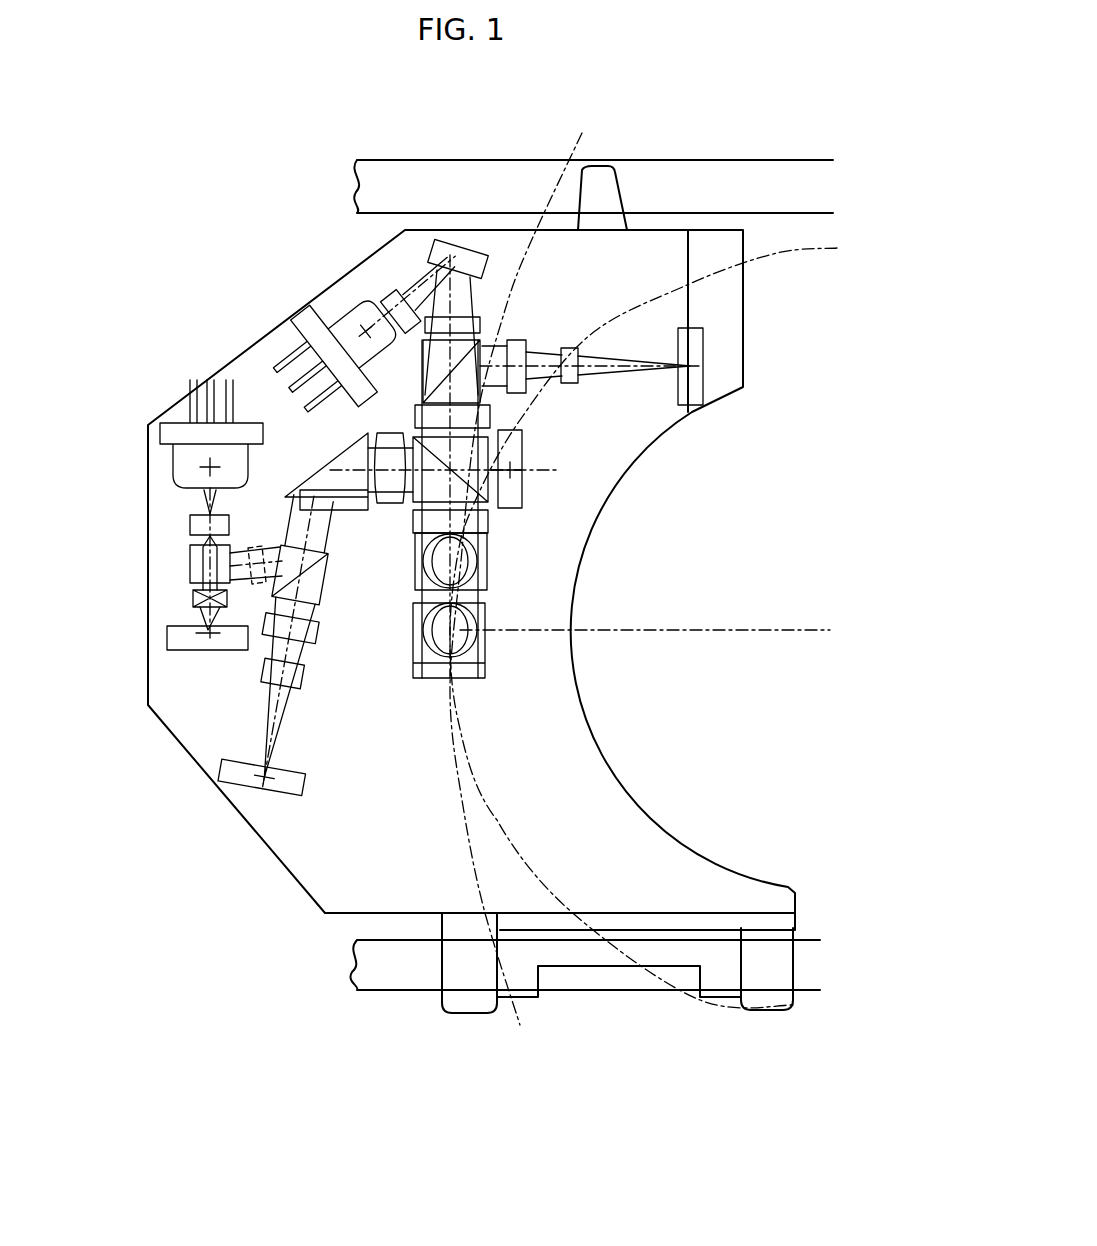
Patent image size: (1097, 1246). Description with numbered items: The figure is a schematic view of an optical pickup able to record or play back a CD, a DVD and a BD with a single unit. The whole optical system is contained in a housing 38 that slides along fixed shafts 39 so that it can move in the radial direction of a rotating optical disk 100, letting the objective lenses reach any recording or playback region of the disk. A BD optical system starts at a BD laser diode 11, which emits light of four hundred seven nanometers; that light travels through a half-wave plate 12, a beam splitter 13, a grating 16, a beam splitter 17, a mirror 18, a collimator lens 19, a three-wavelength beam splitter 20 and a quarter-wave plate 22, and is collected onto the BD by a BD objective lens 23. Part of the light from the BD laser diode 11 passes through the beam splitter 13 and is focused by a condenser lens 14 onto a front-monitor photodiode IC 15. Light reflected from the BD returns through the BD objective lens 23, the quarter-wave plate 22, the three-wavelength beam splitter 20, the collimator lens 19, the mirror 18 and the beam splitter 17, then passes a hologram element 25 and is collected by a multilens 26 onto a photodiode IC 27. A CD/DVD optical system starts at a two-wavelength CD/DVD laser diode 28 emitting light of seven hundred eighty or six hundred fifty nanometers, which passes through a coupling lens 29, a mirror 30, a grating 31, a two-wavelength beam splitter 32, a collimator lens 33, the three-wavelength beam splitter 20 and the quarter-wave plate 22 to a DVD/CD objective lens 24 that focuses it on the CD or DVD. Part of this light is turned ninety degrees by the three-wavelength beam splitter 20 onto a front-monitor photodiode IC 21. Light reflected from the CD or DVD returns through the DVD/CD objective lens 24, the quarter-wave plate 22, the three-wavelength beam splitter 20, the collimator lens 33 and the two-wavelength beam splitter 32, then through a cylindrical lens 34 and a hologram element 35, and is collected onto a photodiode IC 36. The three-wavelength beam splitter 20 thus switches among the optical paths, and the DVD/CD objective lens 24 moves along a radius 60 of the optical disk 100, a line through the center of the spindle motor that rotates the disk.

The BD laser diode 11 is at (158, 459).
The half-wave plate 12 is at (190, 527).
The beam splitter 13 is at (190, 566).
The condenser lens 14 is at (190, 599).
The front-monitor photodiode IC 15 is at (170, 637).
The grating 16 is at (260, 545).
The beam splitter 17 is at (330, 600).
The mirror 18 is at (325, 468).
The collimator lens 19 is at (386, 432).
The three-wavelength beam splitter 20 is at (490, 443).
The front-monitor photodiode IC 21 is at (522, 479).
The quarter-wave plate 22 is at (488, 521).
The BD objective lens 23 is at (487, 566).
The DVD/CD objective lens 24 is at (485, 621).
The hologram element 25 is at (262, 640).
The multilens 26 is at (262, 690).
The photodiode IC 27 is at (212, 778).
The CD/DVD laser diode 28 is at (290, 320).
The coupling lens 29 is at (380, 308).
The mirror 30 is at (490, 255).
The grating 31 is at (472, 319).
The two-wavelength beam splitter 32 is at (490, 346).
The collimator lens 33 is at (490, 416).
The cylindrical lens 34 is at (520, 340).
The hologram element 35 is at (585, 353).
The photodiode IC 36 is at (703, 330).
The housing 38 is at (290, 893).
The fixed shafts 39 is at (455, 160).
The radius 60 is at (646, 628).
The optical disk 100 is at (805, 1005).